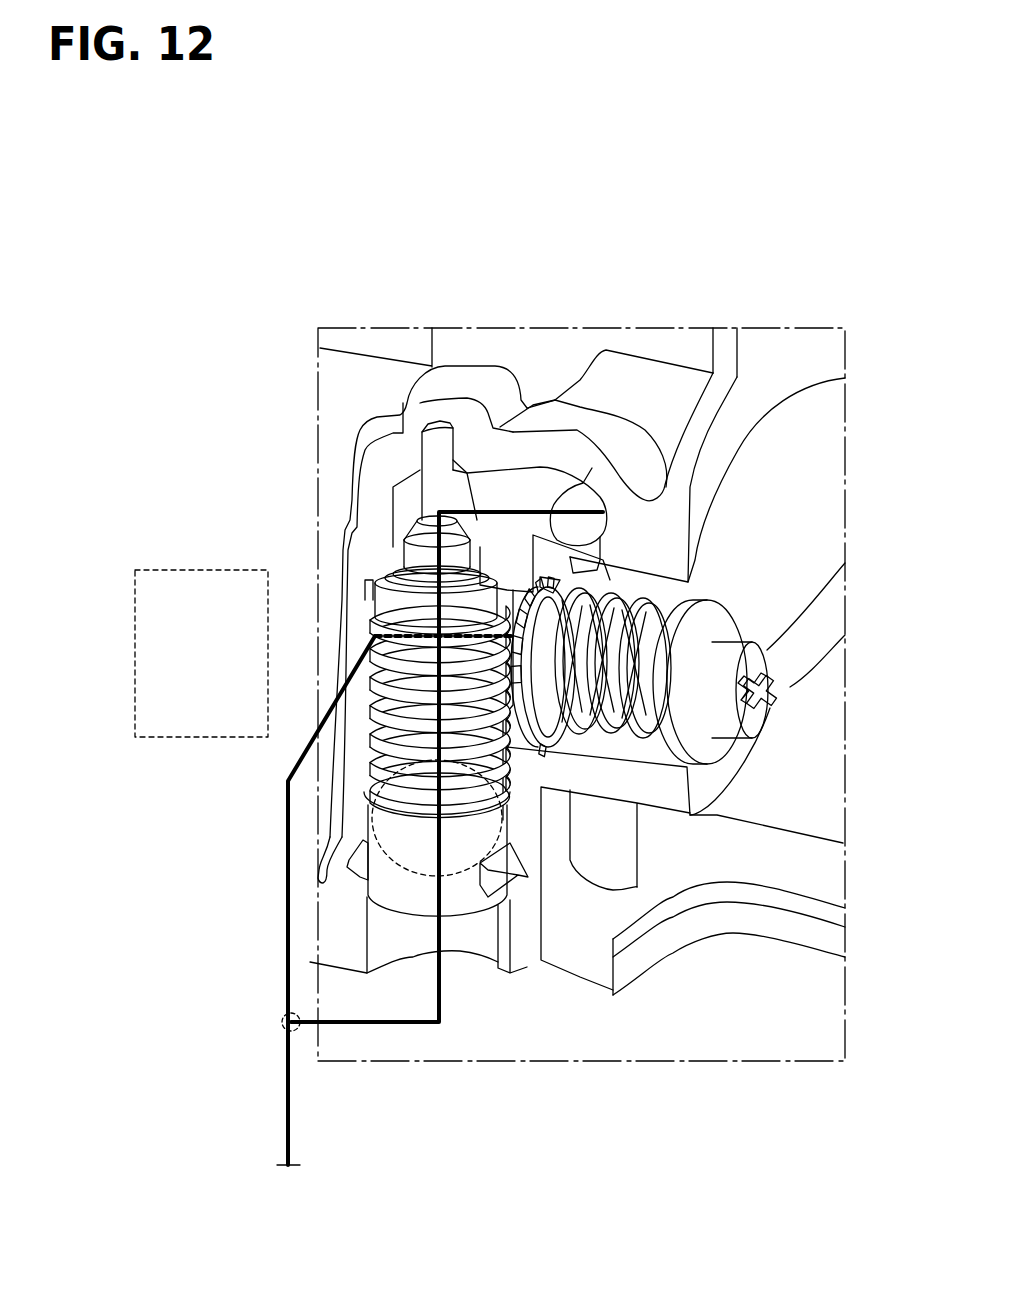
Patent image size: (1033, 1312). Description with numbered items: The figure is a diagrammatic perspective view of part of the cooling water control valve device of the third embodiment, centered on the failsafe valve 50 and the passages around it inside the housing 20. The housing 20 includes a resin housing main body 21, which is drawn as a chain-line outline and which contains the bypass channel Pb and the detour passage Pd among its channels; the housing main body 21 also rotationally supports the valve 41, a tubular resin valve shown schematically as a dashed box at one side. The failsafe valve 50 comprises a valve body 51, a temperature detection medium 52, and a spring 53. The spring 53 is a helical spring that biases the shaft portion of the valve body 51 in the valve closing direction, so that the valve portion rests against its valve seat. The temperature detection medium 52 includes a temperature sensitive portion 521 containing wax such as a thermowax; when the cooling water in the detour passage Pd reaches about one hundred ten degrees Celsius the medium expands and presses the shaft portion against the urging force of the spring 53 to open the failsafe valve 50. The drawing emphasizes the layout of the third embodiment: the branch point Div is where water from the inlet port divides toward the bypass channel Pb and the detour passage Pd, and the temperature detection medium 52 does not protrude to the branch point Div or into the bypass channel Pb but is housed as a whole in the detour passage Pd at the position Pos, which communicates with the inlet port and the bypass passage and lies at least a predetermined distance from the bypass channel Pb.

The housing 20 is at (727, 328).
The housing main body 21 is at (783, 347).
The valve 41 is at (164, 578).
The failsafe valve 50 is at (350, 752).
The valve body 51 is at (385, 590).
The temperature detection medium 52 is at (393, 808).
The temperature sensitive portion 521 is at (375, 812).
The spring 53 is at (375, 612).
The bypass channel Pb is at (288, 887).
The detour passage Pd is at (440, 987).
The position Pos is at (388, 862).
The branch point Div is at (283, 1030).